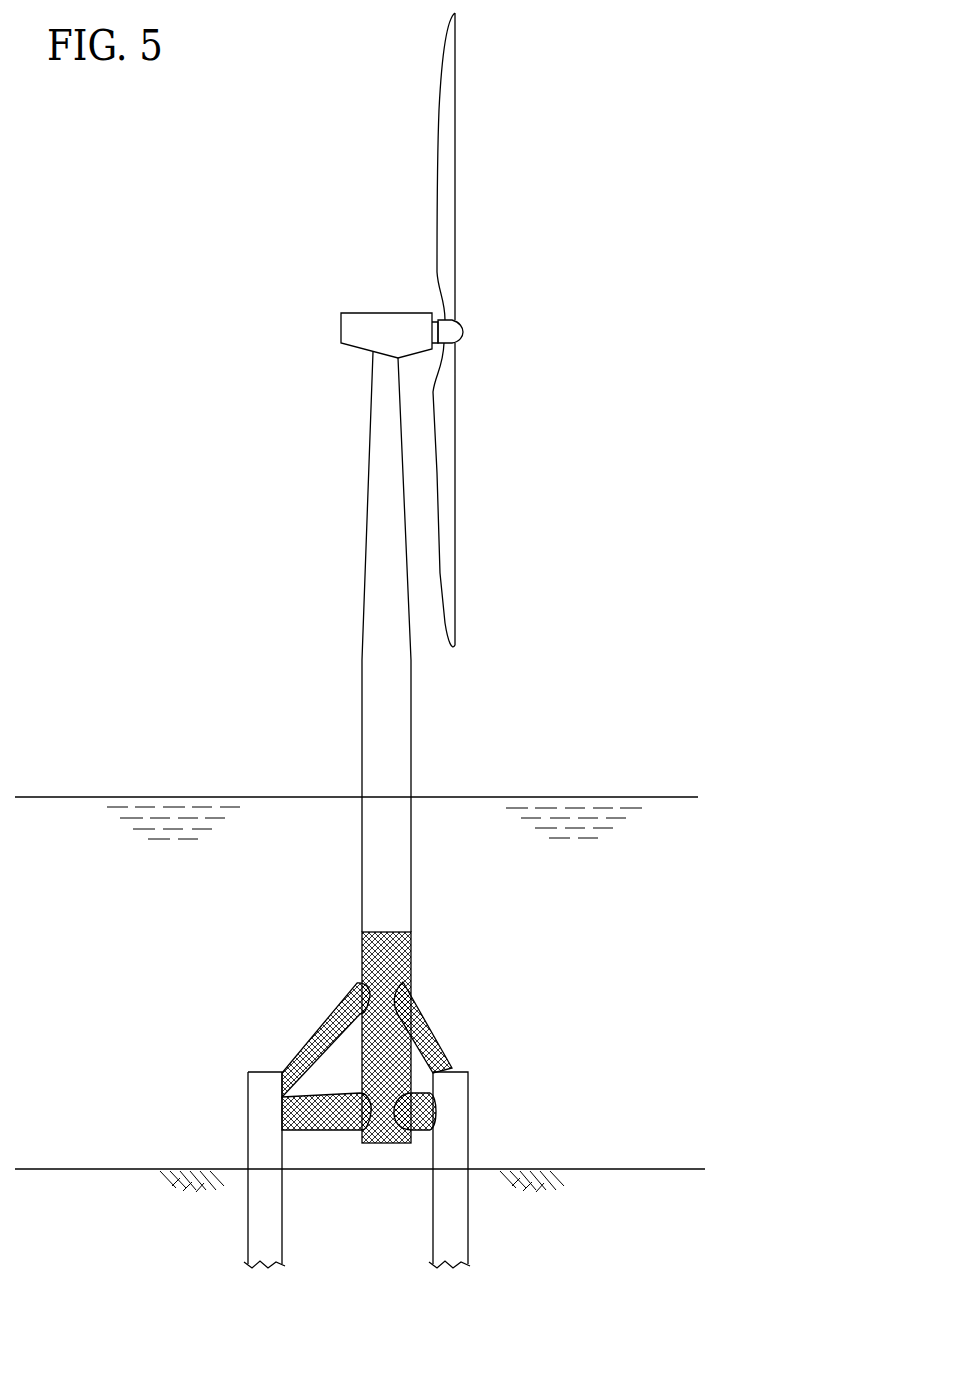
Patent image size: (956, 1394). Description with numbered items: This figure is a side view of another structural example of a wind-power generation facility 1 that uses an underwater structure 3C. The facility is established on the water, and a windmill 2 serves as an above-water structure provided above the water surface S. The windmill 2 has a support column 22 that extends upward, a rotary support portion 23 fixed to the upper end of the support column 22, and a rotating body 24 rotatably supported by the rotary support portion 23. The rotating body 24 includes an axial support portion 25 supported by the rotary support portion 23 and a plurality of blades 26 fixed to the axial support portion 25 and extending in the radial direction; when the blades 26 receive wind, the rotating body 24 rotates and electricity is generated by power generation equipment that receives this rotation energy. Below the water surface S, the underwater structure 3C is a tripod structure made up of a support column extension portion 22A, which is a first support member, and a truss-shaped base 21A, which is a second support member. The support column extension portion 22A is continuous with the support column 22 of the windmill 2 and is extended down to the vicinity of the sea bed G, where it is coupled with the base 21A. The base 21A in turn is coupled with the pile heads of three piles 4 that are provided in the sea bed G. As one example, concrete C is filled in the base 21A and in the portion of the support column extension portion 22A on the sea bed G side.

The wind-power generation facility 1 is at (630, 306).
The windmill 2 is at (299, 366).
The support column 22 is at (375, 533).
The support column extension portion 22A is at (405, 858).
The rotary support portion 23 is at (377, 314).
The rotating body 24 is at (496, 284).
The axial support portion 25 is at (460, 326).
The blade 26 is at (450, 178).
The underwater structure 3C is at (285, 838).
The truss-shaped base 21A is at (323, 986).
The concrete C is at (300, 1040).
The pile 4 is at (209, 1216).
The water surface S is at (638, 797).
The sea bed G is at (637, 1168).